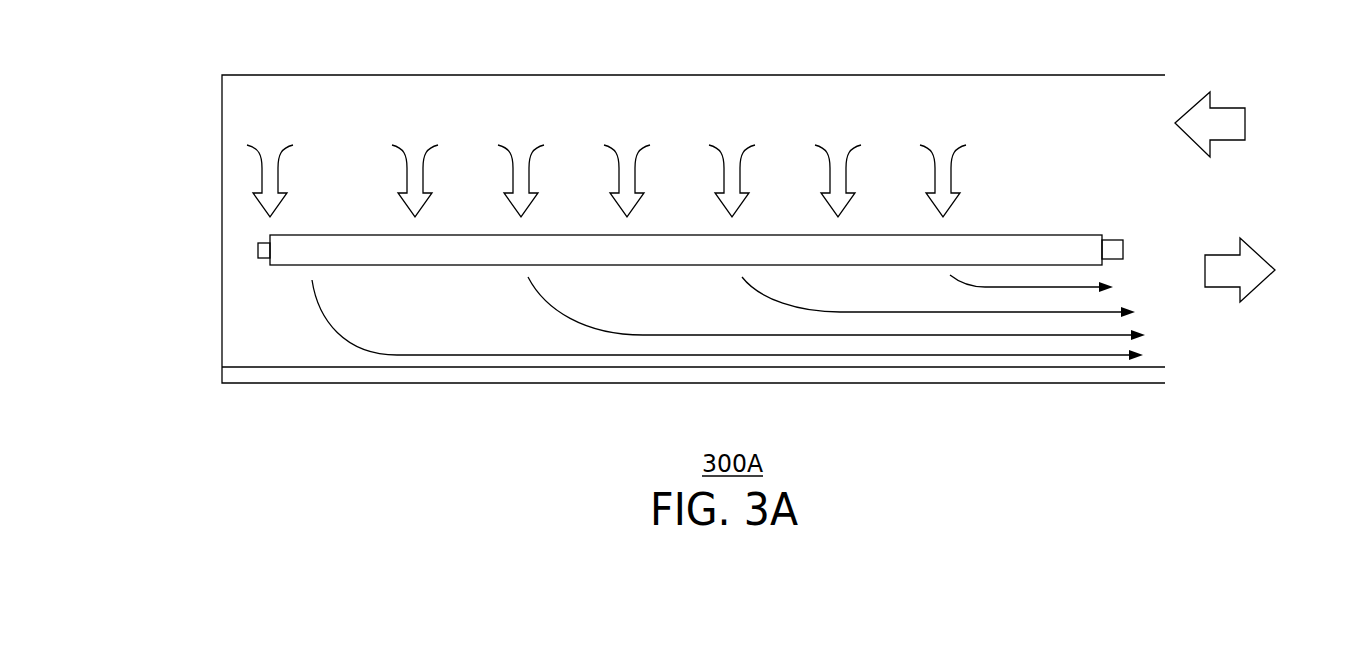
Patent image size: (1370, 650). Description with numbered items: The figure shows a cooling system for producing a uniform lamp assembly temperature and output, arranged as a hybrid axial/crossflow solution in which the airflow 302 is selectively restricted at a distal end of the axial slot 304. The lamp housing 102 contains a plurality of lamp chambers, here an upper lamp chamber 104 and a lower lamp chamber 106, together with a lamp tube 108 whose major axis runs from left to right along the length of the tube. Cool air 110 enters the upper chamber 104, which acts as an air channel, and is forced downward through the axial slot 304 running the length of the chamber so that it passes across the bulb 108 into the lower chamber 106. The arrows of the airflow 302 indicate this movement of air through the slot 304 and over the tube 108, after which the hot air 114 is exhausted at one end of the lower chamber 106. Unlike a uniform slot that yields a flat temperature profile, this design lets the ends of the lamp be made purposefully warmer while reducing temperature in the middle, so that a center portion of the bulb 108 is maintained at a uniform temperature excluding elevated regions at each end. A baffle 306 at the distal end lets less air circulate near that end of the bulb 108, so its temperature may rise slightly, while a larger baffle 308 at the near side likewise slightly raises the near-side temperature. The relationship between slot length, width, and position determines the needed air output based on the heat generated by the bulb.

The lamp housing 102 is at (293, 75).
The lamp chamber 104 is at (250, 98).
The lamp chamber 106 is at (250, 326).
The lamp tube 108 is at (248, 250).
The cool air 110 is at (1262, 127).
The hot air 114 is at (1286, 277).
The airflow 302 is at (273, 137).
The axial slot 304 is at (990, 132).
The baffle 306 is at (300, 182).
The baffle 308 is at (978, 182).